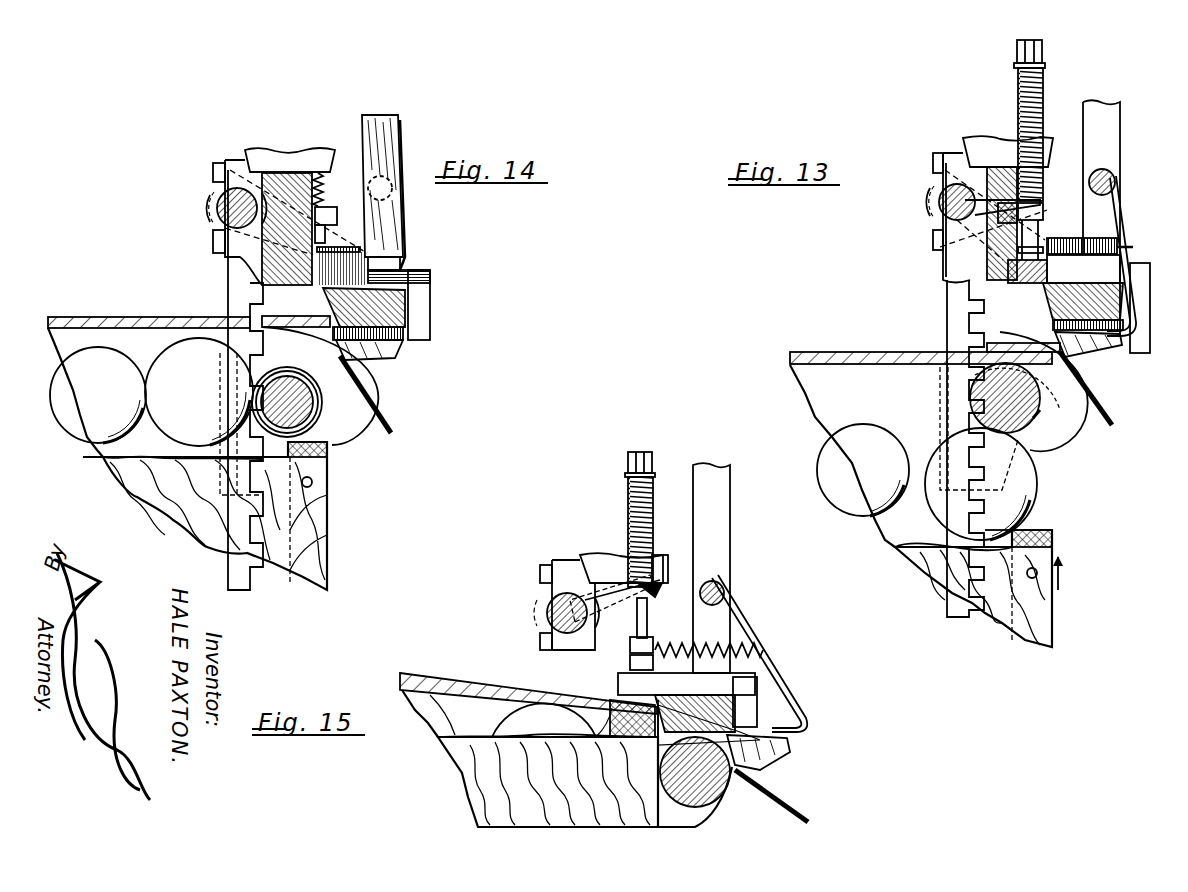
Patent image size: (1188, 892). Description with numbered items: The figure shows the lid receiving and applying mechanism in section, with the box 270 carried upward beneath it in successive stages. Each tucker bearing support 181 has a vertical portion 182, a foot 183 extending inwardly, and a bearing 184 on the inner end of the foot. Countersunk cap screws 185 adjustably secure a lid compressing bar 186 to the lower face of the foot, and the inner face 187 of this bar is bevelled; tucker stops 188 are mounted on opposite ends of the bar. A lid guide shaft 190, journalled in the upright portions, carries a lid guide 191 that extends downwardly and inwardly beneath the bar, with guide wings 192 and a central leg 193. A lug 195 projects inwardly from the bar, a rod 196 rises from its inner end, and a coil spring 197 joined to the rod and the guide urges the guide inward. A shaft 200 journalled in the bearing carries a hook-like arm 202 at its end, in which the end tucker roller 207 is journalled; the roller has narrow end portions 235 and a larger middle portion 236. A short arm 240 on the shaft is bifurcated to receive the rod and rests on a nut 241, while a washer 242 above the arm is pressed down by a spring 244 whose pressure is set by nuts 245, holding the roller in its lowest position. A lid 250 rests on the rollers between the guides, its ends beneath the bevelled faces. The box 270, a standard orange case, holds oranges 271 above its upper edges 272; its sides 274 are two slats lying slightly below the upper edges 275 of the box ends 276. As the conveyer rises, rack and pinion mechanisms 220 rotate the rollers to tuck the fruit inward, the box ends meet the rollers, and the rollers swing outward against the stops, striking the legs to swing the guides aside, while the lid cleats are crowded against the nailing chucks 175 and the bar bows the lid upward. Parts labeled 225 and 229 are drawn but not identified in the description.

In FIG. 14, the nailing chucks 175 is at (266, 151).
In FIG. 13, the nailing chucks 175 is at (985, 138).
In FIG. 15, the nailing chucks 175 is at (598, 556).
In FIG. 15, the tucker bearing supports 181 is at (735, 564).
In FIG. 14, the vertical portions 182 is at (388, 130).
In FIG. 13, the vertical portions 182 is at (1110, 133).
In FIG. 15, the vertical portions 182 is at (718, 522).
In FIG. 14, the feet 183 is at (301, 275).
In FIG. 15, the feet 183 is at (668, 645).
In FIG. 14, the bearings 184 is at (226, 162).
In FIG. 13, the bearings 184 is at (950, 153).
In FIG. 15, the bearings 184 is at (578, 566).
In FIG. 13, the countersunk cap screws 185 is at (1138, 316).
In FIG. 14, the lid compressing bar 186 is at (392, 312).
In FIG. 13, the lid compressing bar 186 is at (1124, 298).
In FIG. 15, the lid compressing bar 186 is at (715, 705).
In FIG. 14, the inner face 187 is at (333, 325).
In FIG. 13, the inner face 187 is at (1053, 324).
In FIG. 15, the inner face 187 is at (662, 733).
In FIG. 14, the tucker stops 188 is at (431, 301).
In FIG. 15, the tucker stops 188 is at (750, 682).
In FIG. 14, the lid guide shaft 190 is at (392, 196).
In FIG. 13, the lid guide shaft 190 is at (1117, 182).
In FIG. 15, the lid guide shaft 190 is at (725, 593).
In FIG. 14, the lid guide 191 is at (482, 253).
In FIG. 13, the lid guide 191 is at (1132, 238).
In FIG. 15, the lid guide 191 is at (812, 714).
In FIG. 14, the guide wings 192 is at (383, 367).
In FIG. 13, the guide wings 192 is at (1110, 360).
In FIG. 15, the guide wings 192 is at (790, 748).
In FIG. 14, the central leg 193 is at (386, 412).
In FIG. 13, the central leg 193 is at (1108, 400).
In FIG. 15, the central leg 193 is at (778, 795).
In FIG. 13, the lug 195 is at (1125, 265).
In FIG. 13, the rod 196 is at (1022, 284).
In FIG. 15, the rod 196 is at (660, 590).
In FIG. 13, the coil spring 197 is at (1080, 240).
In FIG. 14, the shaft 200 is at (222, 210).
In FIG. 13, the shaft 200 is at (942, 203).
In FIG. 15, the shaft 200 is at (547, 613).
In FIG. 13, the hook-like arm 202 is at (1048, 412).
In FIG. 15, the end tucker roller 207 is at (715, 795).
In FIG. 13, the rack and pinion mechanisms 220 is at (968, 386).
In FIG. 13, the stop 225 is at (1033, 420).
In FIG. 14, the rack 229 is at (228, 280).
In FIG. 13, the rack 229 is at (947, 325).
In FIG. 14, the end portions 235 is at (318, 430).
In FIG. 14, the middle portion 236 is at (310, 410).
In FIG. 13, the short arm 240 is at (952, 250).
In FIG. 15, the short arm 240 is at (662, 560).
In FIG. 13, the nut 241 is at (1040, 213).
In FIG. 13, the washer 242 is at (1020, 208).
In FIG. 13, the spring 244 is at (1036, 128).
In FIG. 15, the spring 244 is at (628, 497).
In FIG. 13, the nuts 245 is at (1043, 52).
In FIG. 15, the nuts 245 is at (650, 455).
In FIG. 14, the lid 250 is at (120, 318).
In FIG. 13, the lid 250 is at (843, 352).
In FIG. 15, the lid 250 is at (450, 676).
In FIG. 14, the box 270 is at (318, 512).
In FIG. 13, the box 270 is at (925, 563).
In FIG. 15, the box 270 is at (585, 763).
In FIG. 14, the oranges 271 is at (166, 335).
In FIG. 13, the oranges 271 is at (852, 440).
In FIG. 15, the oranges 271 is at (528, 710).
In FIG. 14, the upper edges 272 is at (92, 455).
In FIG. 13, the upper edges 272 is at (878, 543).
In FIG. 15, the upper edges 272 is at (450, 740).
In FIG. 14, the sides 274 is at (100, 463).
In FIG. 13, the sides 274 is at (930, 580).
In FIG. 15, the sides 274 is at (470, 765).
In FIG. 14, the upper edges 275 is at (330, 448).
In FIG. 13, the upper edges 275 is at (1030, 530).
In FIG. 15, the upper edges 275 is at (612, 702).
In FIG. 13, the box ends 276 is at (1053, 538).